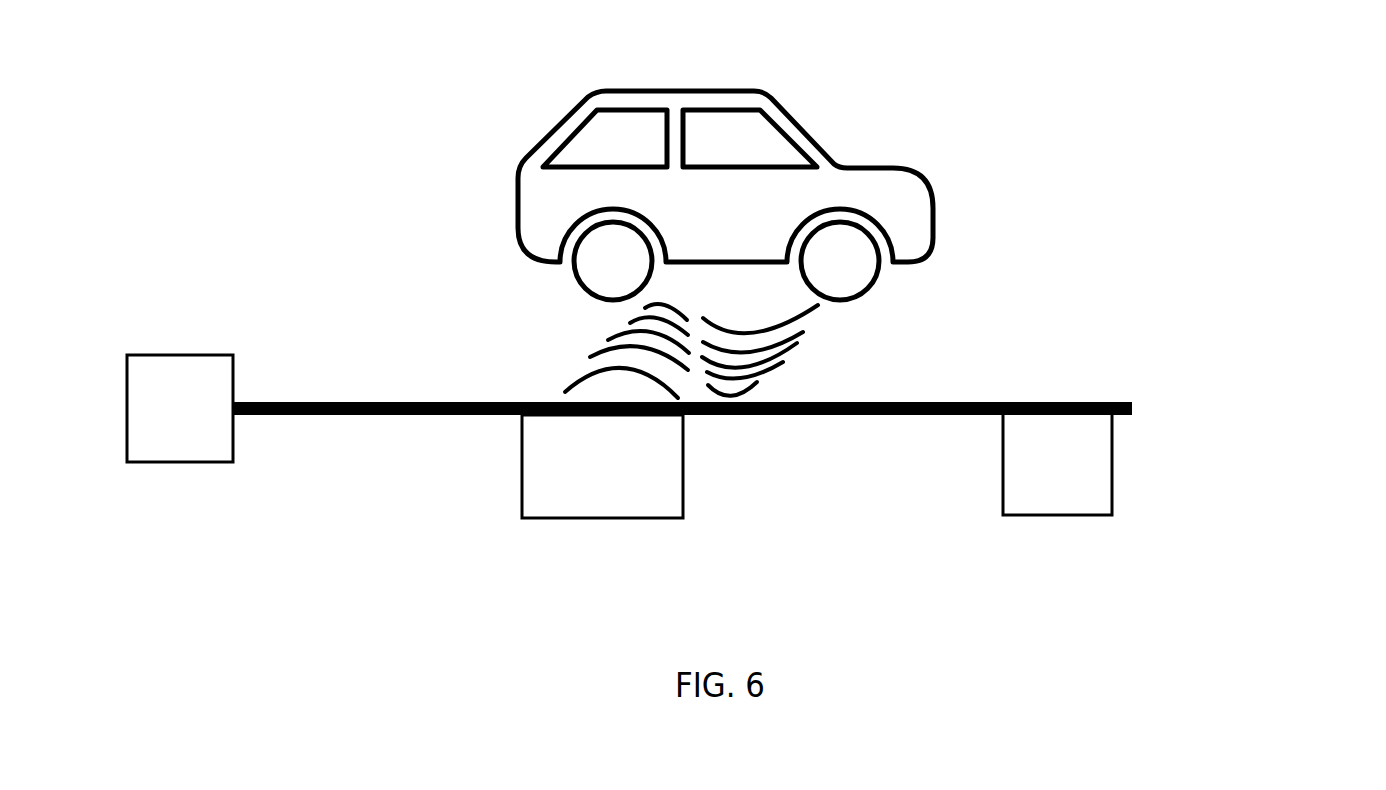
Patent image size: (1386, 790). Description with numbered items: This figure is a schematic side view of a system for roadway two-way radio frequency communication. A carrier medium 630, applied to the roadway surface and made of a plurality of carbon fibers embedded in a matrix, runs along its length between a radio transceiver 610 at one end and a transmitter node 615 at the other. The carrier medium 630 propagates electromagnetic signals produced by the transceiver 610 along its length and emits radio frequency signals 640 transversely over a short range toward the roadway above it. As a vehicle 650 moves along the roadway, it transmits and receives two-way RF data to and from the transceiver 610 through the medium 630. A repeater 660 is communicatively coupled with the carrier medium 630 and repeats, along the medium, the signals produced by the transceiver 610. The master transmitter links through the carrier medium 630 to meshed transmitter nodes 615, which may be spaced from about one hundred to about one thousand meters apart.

The radio transceiver 610 is at (210, 448).
The transmitter node 615 is at (1087, 502).
The carrier medium 630 is at (1132, 407).
The radio frequency signals 640 is at (518, 343).
The vehicle 650 is at (866, 116).
The repeater 660 is at (628, 506).